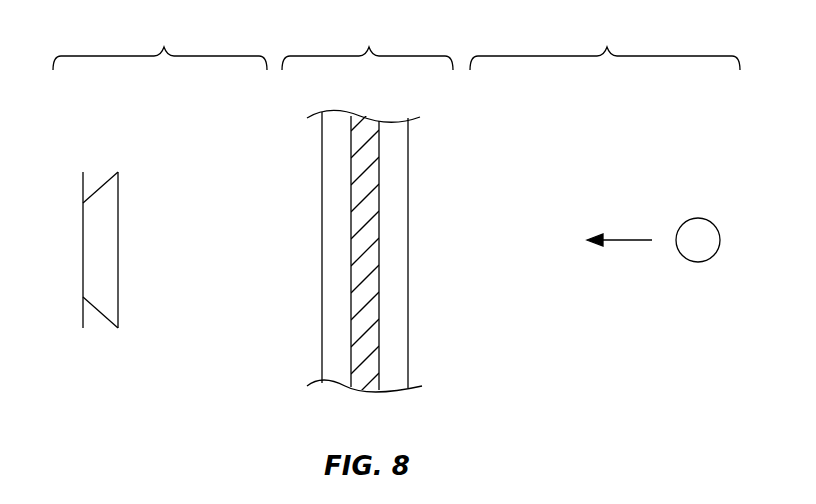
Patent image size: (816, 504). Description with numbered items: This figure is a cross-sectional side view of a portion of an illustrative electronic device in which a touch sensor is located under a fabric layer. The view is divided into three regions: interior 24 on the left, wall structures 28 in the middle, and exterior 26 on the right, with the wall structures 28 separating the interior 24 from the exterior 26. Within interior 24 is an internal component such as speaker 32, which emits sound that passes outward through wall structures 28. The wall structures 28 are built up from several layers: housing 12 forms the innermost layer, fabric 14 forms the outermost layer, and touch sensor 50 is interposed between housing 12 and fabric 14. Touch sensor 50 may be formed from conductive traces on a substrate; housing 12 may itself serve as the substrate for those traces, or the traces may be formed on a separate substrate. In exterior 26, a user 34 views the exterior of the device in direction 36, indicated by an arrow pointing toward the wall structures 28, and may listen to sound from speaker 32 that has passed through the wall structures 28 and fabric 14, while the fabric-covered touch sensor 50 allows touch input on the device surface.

The interior 24 is at (160, 47).
The wall structures 28 is at (367, 47).
The exterior 26 is at (605, 47).
The speaker 32 is at (100, 305).
The housing 12 is at (335, 210).
The touch sensor 50 is at (370, 238).
The fabric 14 is at (395, 163).
The direction 36 is at (630, 241).
The user 34 is at (698, 262).